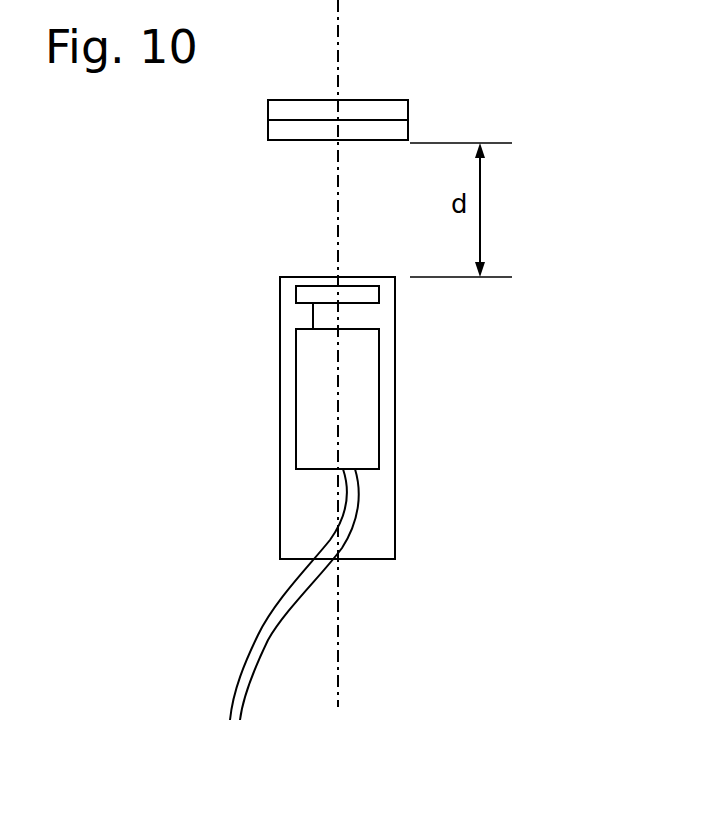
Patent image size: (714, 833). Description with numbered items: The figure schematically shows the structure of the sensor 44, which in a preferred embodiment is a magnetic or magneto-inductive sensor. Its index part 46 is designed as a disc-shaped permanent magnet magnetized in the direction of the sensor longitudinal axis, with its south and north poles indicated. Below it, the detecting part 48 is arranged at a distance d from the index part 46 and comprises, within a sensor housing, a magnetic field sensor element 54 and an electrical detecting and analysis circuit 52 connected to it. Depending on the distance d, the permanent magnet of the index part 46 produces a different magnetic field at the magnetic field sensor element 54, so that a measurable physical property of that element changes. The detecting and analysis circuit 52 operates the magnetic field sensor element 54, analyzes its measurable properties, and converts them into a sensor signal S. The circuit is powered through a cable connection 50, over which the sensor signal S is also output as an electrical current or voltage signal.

The sensor 44 is at (508, 105).
The index part 46 is at (410, 111).
The detecting part 48 is at (395, 405).
The cable connection 50 is at (268, 616).
The detecting and analysis circuit 52 is at (296, 397).
The magnetic field sensor element 54 is at (306, 292).